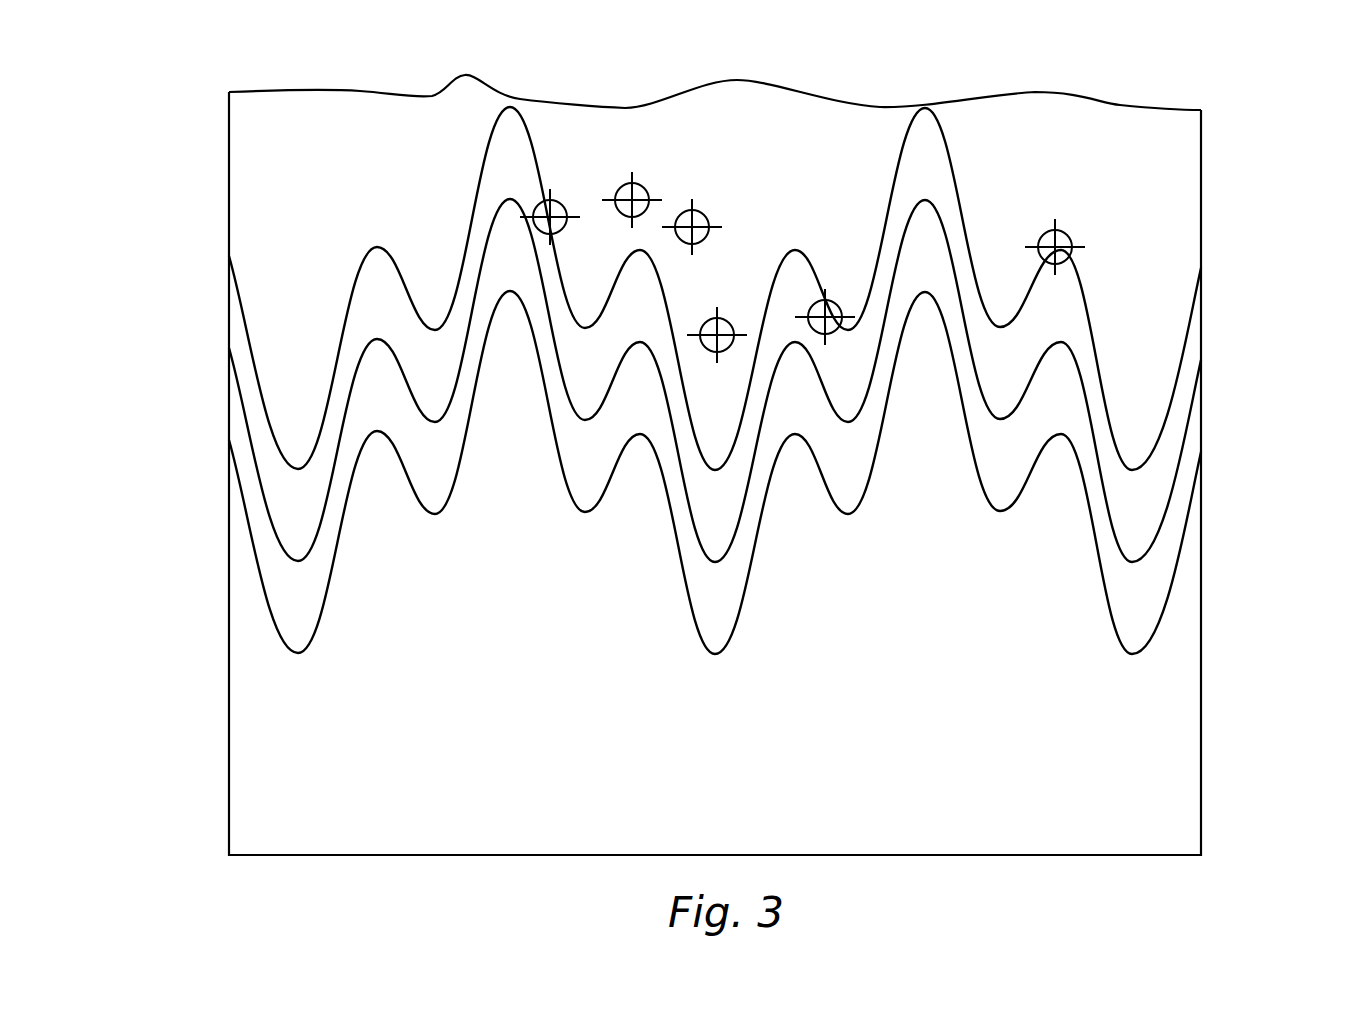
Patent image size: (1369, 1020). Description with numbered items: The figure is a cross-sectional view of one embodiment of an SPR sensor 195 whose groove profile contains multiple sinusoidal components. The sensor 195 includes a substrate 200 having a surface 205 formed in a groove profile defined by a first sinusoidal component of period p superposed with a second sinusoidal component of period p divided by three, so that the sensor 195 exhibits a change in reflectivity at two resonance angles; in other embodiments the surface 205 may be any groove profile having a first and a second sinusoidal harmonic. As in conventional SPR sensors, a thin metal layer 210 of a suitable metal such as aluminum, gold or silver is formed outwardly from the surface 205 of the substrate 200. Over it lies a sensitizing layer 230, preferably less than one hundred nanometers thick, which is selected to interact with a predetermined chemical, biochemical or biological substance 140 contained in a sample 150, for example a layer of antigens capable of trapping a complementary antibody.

The substance 140 is at (1060, 227).
The sample 150 is at (1122, 111).
The SPR sensor 195 is at (1262, 199).
The substrate 200 is at (733, 752).
The surface 205 is at (237, 413).
The thin metal layer 210 is at (735, 598).
The sensitizing layer 230 is at (735, 503).